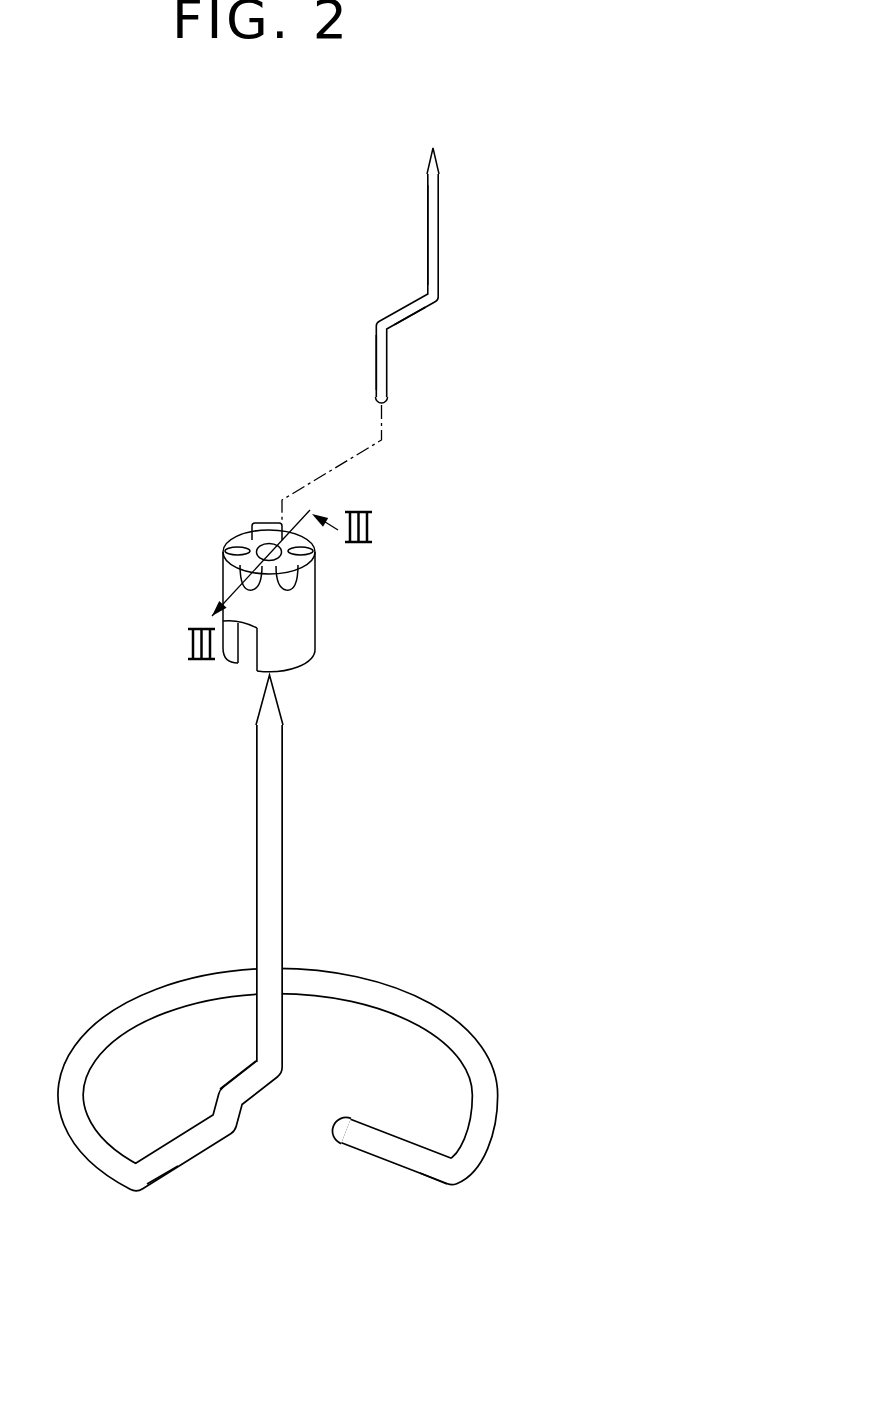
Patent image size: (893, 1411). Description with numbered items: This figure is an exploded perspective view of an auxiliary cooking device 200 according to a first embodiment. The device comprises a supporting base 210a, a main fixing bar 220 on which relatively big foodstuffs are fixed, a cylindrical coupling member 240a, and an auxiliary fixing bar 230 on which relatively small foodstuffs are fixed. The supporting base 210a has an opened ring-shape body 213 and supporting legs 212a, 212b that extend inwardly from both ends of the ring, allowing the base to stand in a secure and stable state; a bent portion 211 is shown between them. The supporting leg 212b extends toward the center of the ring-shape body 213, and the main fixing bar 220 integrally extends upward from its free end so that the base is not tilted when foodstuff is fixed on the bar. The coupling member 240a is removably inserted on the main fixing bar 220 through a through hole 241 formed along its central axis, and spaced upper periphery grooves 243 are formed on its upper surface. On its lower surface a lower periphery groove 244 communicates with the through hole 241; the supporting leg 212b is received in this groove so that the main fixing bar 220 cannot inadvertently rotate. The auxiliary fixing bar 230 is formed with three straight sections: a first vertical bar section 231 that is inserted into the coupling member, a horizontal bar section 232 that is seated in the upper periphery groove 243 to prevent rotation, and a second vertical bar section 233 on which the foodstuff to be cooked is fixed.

The auxiliary cooking device 200 is at (92, 411).
The supporting base 210a is at (286, 1266).
The bent portion 211 is at (266, 1155).
The supporting leg 212a is at (387, 1167).
The supporting leg 212b is at (157, 1172).
The opened ring-shape body 213 is at (467, 1153).
The main fixing bar 220 is at (277, 837).
The auxiliary fixing bar 230 is at (588, 309).
The first vertical bar section 231 is at (383, 363).
The horizontal bar section 232 is at (413, 310).
The second vertical bar section 233 is at (431, 247).
The coupling member 240a is at (300, 629).
The through hole 241 is at (256, 538).
The upper periphery groove 243 is at (228, 548).
The lower periphery groove 244 is at (245, 638).